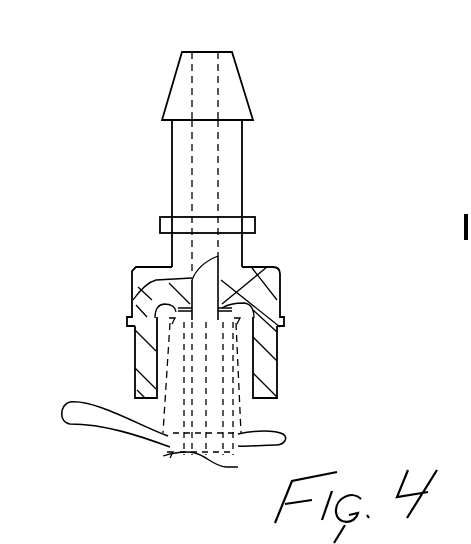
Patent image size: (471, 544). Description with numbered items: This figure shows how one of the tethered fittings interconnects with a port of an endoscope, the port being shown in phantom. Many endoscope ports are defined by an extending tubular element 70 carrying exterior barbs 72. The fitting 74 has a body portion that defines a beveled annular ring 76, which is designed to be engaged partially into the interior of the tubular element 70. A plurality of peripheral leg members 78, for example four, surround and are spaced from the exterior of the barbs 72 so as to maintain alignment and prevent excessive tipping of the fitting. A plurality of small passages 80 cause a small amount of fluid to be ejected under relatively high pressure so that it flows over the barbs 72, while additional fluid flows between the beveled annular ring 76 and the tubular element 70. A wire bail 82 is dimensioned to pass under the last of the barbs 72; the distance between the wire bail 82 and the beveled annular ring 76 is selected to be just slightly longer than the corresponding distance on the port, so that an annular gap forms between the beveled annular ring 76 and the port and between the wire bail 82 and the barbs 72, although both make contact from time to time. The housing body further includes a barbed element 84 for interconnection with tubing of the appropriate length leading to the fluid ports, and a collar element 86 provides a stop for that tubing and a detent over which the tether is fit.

The tubular element 70 is at (233, 340).
The exterior barbs 72 is at (242, 384).
The fitting 74 is at (253, 200).
The beveled annular ring 76 is at (254, 306).
The peripheral leg members 78 is at (272, 398).
The small passages 80 is at (228, 271).
The wire bail 82 is at (88, 423).
The barbed element 84 is at (239, 95).
The collar element 86 is at (160, 222).